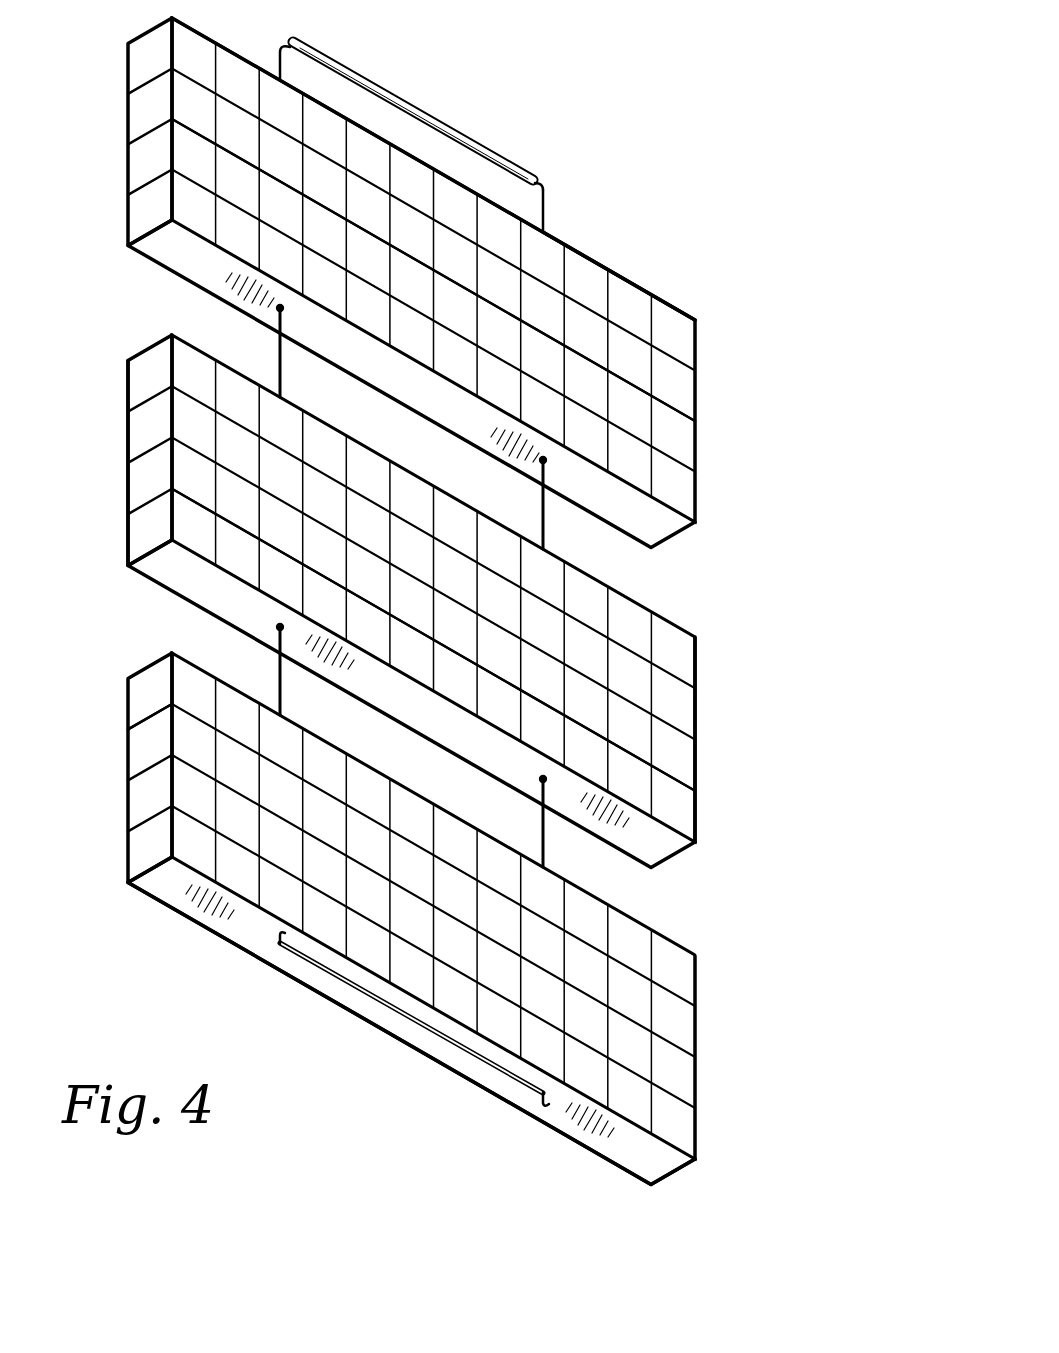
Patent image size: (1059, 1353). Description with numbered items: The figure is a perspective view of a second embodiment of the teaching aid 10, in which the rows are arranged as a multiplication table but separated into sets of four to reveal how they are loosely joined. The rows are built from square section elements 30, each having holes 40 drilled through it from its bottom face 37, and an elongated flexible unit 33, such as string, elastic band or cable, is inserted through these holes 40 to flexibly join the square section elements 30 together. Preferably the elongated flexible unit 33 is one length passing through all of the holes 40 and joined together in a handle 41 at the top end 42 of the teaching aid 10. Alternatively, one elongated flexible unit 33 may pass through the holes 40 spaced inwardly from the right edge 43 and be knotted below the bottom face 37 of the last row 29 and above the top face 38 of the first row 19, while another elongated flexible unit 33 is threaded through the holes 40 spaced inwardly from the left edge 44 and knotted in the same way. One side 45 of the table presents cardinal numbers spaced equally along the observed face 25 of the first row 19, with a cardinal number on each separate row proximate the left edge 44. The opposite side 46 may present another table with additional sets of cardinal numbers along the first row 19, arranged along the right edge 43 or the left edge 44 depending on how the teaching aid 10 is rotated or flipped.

The teaching aid 10 is at (711, 111).
The first row 19 is at (133, 58).
The observed face 25 is at (663, 372).
The last row 29 is at (152, 853).
The square section elements 30 is at (145, 688).
The elongated flexible unit 33 is at (564, 526).
The bottom face 37 is at (640, 1155).
The top face 38 is at (650, 293).
The holes 40 is at (280, 947).
The handle 41 is at (420, 110).
The top end 42 is at (579, 160).
The right edge 43 is at (742, 716).
The left edge 44 is at (77, 454).
The one side 45 is at (677, 768).
The opposite side 46 is at (145, 745).